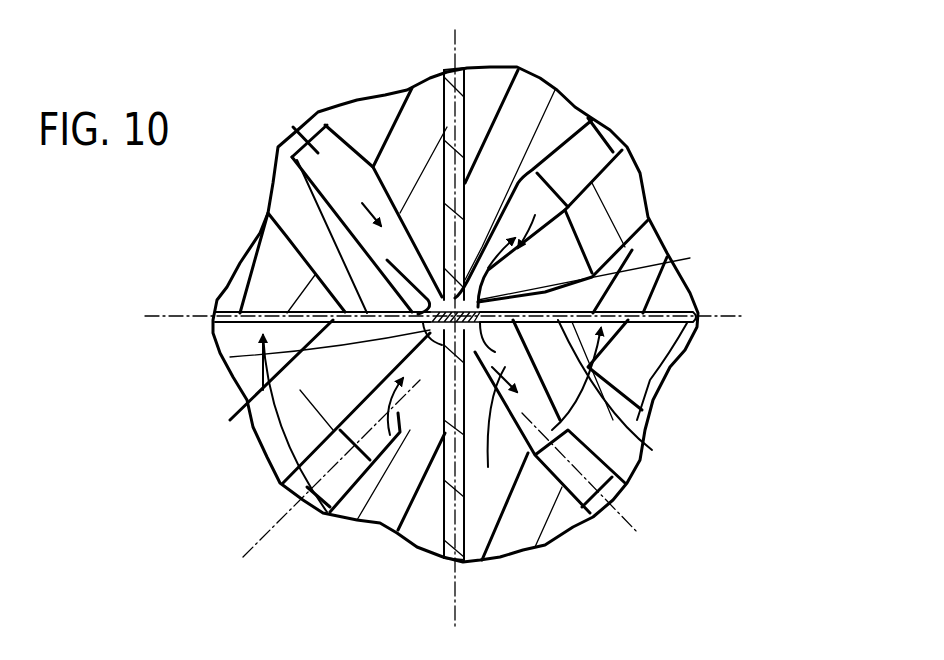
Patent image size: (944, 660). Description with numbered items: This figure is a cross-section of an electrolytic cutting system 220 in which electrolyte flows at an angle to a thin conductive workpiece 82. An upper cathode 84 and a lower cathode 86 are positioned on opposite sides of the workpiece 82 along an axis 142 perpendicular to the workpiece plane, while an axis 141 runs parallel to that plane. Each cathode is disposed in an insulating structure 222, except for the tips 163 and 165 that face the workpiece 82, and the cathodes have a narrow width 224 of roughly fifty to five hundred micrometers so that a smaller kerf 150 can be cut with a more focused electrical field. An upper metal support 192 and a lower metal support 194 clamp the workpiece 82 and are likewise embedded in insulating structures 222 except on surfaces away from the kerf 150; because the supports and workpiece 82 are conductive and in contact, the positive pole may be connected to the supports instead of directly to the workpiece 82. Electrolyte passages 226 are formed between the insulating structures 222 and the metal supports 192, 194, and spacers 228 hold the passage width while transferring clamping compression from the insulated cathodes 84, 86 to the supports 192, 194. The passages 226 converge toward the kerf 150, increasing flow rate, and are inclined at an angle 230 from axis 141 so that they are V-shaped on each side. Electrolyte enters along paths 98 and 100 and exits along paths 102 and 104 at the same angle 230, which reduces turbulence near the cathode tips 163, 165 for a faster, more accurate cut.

The workpiece 82 is at (685, 330).
The upper cathode 84 is at (446, 70).
The lower cathode 86 is at (447, 562).
The path 98 is at (370, 200).
The path 100 is at (398, 433).
The path 102 is at (505, 260).
The path 104 is at (502, 413).
The axis 141 is at (735, 316).
The axis 142 is at (457, 585).
The kerf 150 is at (498, 350).
The tip 163 is at (605, 271).
The tip 165 is at (245, 357).
The upper metal support 192 is at (273, 283).
The lower metal support 194 is at (240, 370).
The electrolytic cutting system 220 is at (578, 62).
The insulating structure 222 is at (378, 105).
The width 224 is at (415, 108).
The electrolyte passage 226 is at (608, 128).
The spacer 228 is at (318, 153).
The angle 230 is at (270, 450).